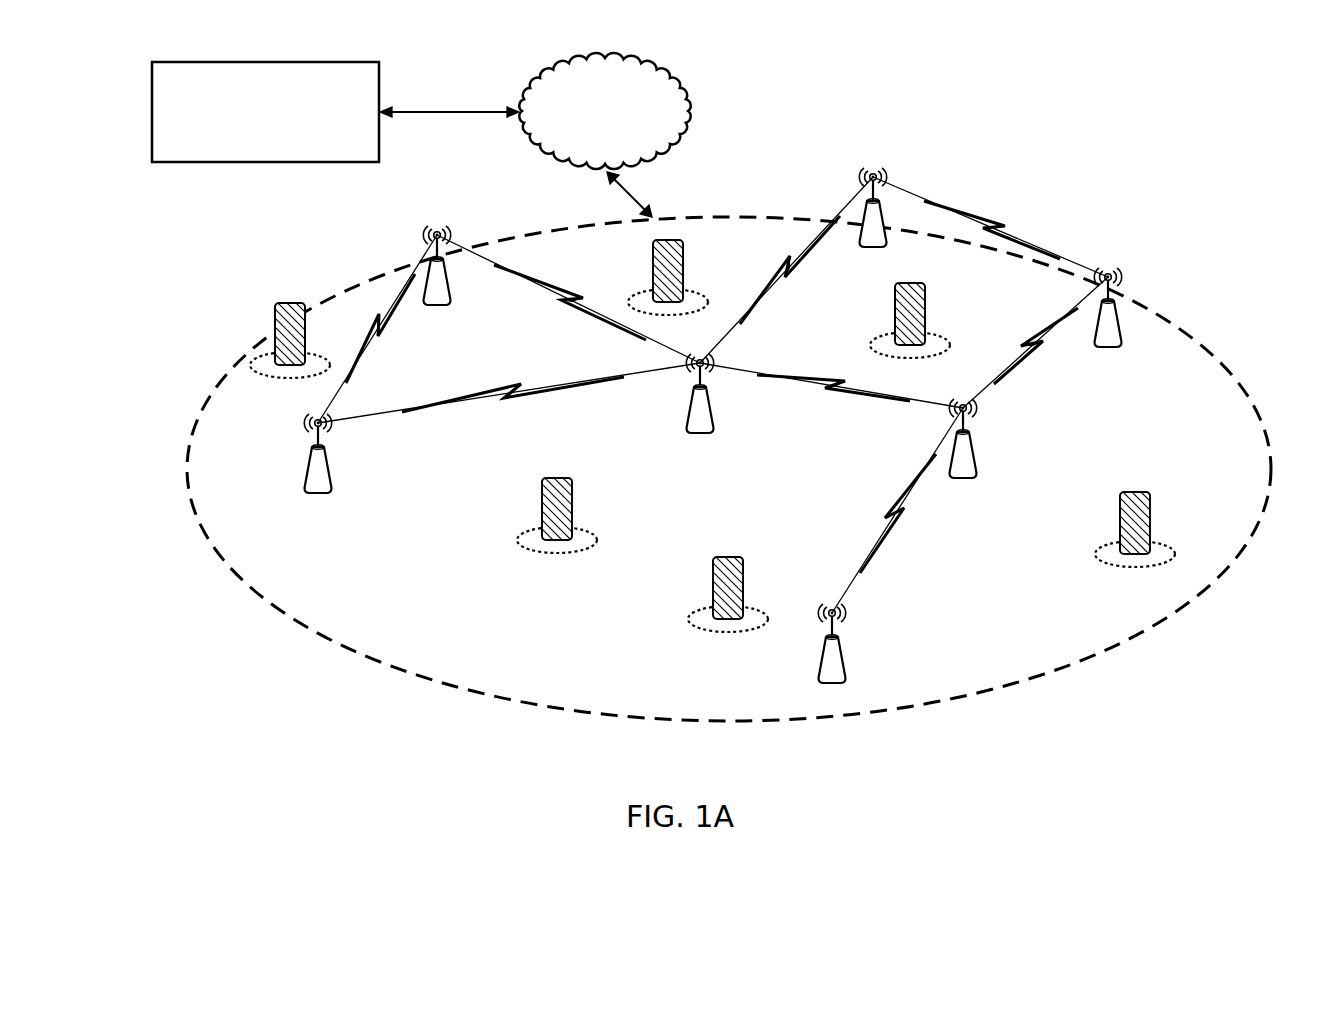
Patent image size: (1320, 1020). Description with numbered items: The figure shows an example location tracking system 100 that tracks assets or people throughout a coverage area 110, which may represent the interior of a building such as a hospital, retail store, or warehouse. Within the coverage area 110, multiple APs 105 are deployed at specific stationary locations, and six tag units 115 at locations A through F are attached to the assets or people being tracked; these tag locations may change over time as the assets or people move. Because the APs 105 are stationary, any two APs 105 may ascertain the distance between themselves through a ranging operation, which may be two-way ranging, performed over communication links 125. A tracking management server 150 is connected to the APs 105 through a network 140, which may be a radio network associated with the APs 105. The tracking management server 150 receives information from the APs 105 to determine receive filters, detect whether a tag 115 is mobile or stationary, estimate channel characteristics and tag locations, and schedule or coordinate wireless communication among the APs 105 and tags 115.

The location tracking system 100 is at (1216, 62).
The AP 105 is at (448, 304).
The coverage area 110 is at (1132, 632).
The tag unit 115 is at (280, 311).
The communication link 125 is at (378, 333).
The network 140 is at (604, 111).
The tracking management server 150 is at (265, 112).